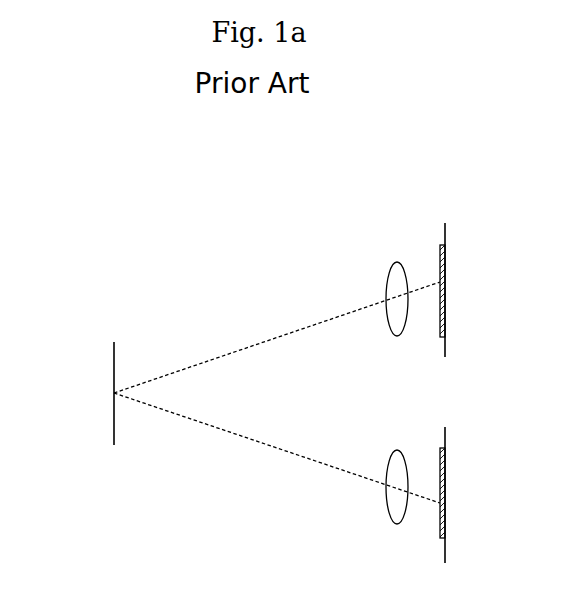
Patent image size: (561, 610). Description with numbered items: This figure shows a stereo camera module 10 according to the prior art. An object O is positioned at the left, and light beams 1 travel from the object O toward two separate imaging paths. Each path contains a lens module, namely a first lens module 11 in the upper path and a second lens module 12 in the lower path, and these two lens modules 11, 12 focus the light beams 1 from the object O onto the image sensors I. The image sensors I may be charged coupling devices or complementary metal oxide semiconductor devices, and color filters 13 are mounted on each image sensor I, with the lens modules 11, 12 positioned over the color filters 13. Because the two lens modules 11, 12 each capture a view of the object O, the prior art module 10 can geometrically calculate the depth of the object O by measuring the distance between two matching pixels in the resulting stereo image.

The object O is at (113, 355).
The light ray / optical axis 1 is at (190, 362).
The prior art imaging system 10 is at (236, 291).
The lens module 11 is at (389, 272).
The lens module 12 is at (391, 452).
The color filter 13 is at (441, 245).
The image sensor I is at (446, 230).